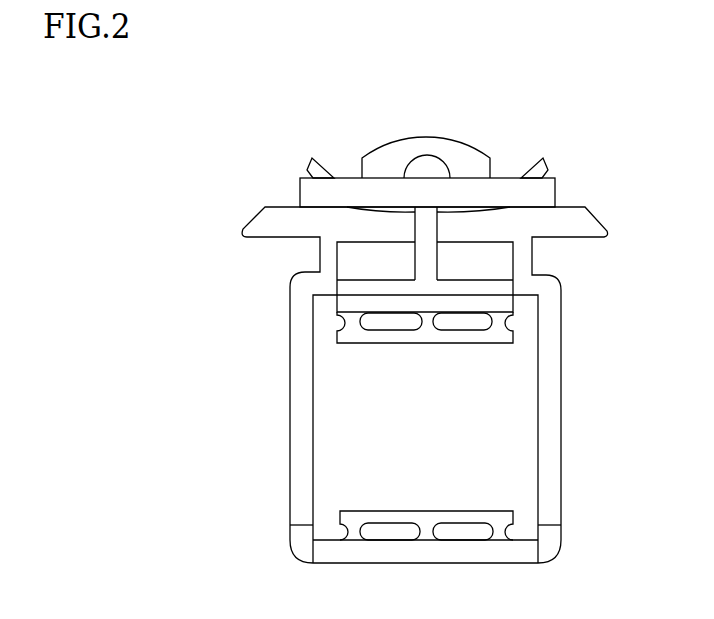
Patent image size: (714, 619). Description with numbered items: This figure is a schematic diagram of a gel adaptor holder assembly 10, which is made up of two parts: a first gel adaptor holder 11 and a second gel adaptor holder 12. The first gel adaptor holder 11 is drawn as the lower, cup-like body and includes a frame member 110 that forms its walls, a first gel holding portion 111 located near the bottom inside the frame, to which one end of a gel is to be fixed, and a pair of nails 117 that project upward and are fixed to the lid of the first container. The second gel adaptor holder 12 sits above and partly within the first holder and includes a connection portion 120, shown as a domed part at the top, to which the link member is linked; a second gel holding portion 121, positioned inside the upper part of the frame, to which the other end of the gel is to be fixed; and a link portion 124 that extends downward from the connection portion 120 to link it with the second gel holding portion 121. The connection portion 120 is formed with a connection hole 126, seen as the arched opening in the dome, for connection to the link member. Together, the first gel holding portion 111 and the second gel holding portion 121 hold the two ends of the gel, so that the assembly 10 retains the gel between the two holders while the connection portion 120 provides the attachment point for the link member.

The gel adaptor holder assembly 10 is at (184, 113).
The first gel adaptor holder 11 is at (548, 485).
The frame member 110 is at (548, 403).
The first gel holding portion 111 is at (365, 508).
The second gel adaptor holder 12 is at (558, 192).
The pair of nails 117 is at (312, 170).
The connection portion 120 is at (480, 147).
The second gel holding portion 121 is at (358, 347).
The link portion 124 is at (433, 255).
The connection hole 126 is at (432, 160).